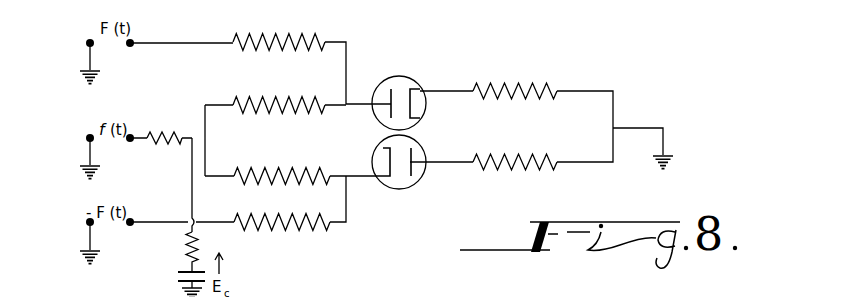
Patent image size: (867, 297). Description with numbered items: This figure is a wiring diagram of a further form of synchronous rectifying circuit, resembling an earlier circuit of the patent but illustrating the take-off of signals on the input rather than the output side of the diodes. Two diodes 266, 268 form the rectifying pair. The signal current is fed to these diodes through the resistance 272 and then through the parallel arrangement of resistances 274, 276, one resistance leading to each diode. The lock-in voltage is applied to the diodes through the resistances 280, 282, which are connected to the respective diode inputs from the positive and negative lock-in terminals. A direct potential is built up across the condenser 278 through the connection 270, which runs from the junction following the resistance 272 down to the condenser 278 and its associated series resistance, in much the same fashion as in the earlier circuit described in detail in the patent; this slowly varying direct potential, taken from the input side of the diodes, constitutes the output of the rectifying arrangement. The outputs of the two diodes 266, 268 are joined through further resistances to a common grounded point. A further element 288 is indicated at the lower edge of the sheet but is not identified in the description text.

The diode 266 is at (402, 77).
The diode 268 is at (404, 189).
The connection 270 is at (193, 197).
The resistance 272 is at (166, 130).
The resistance 274 is at (257, 110).
The resistance 276 is at (308, 168).
The condenser 278 is at (183, 272).
The resistance 280 is at (280, 35).
The resistance 282 is at (268, 228).
The circuit element (cut off) 288 is at (368, 292).